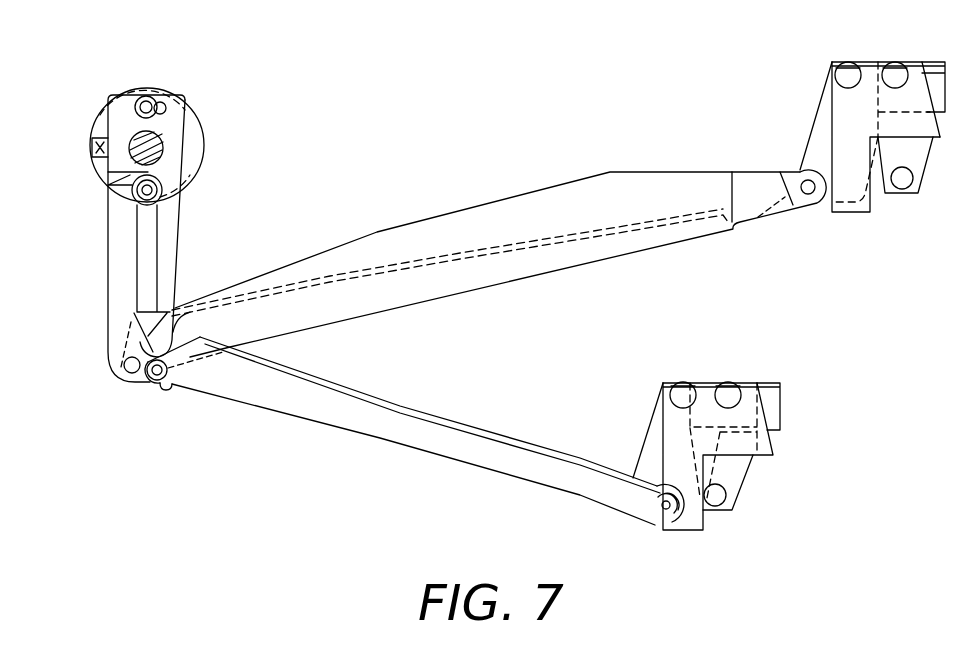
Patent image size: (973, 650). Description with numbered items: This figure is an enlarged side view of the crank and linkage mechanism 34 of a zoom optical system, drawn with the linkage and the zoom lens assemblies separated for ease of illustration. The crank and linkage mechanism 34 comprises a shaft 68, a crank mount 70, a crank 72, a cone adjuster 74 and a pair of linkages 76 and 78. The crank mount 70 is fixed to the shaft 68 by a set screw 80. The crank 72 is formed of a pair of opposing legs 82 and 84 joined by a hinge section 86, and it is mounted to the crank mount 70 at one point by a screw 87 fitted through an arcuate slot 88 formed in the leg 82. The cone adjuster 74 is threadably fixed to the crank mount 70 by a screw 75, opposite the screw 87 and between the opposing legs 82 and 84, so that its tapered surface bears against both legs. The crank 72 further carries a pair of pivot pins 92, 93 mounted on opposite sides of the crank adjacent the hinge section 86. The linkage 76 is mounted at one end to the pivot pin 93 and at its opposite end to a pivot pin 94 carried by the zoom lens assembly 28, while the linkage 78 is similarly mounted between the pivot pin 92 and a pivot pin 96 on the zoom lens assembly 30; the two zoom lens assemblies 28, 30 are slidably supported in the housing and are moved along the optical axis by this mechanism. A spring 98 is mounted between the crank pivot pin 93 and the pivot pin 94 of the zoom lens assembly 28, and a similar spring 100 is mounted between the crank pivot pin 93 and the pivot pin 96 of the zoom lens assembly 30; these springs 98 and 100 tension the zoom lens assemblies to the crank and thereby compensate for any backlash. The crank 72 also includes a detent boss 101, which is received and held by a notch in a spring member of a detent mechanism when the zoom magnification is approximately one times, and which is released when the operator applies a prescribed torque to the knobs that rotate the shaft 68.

The zoom lens assembly 28 is at (796, 86).
The zoom lens assembly 30 is at (799, 464).
The crank and linkage mechanism 34 is at (277, 430).
The shaft 68 is at (166, 138).
The crank mount 70 is at (205, 142).
The crank 72 is at (92, 228).
The cone adjuster 74 is at (174, 183).
The screw 75 is at (132, 193).
The linkage 76 is at (517, 207).
The linkage 78 is at (492, 432).
The set screw 80 is at (88, 142).
The leg 82 is at (172, 236).
The leg 84 is at (108, 287).
The hinge section 86 is at (172, 333).
The screw 87 is at (145, 99).
The arcuate slot 88 is at (164, 104).
The pivot pin 92 is at (152, 380).
The pivot pin 93 is at (128, 374).
The pivot pin 94 is at (808, 193).
The pivot pin 96 is at (640, 456).
The spring 98 is at (684, 226).
The spring 100 is at (405, 406).
The detent boss 101 is at (175, 390).